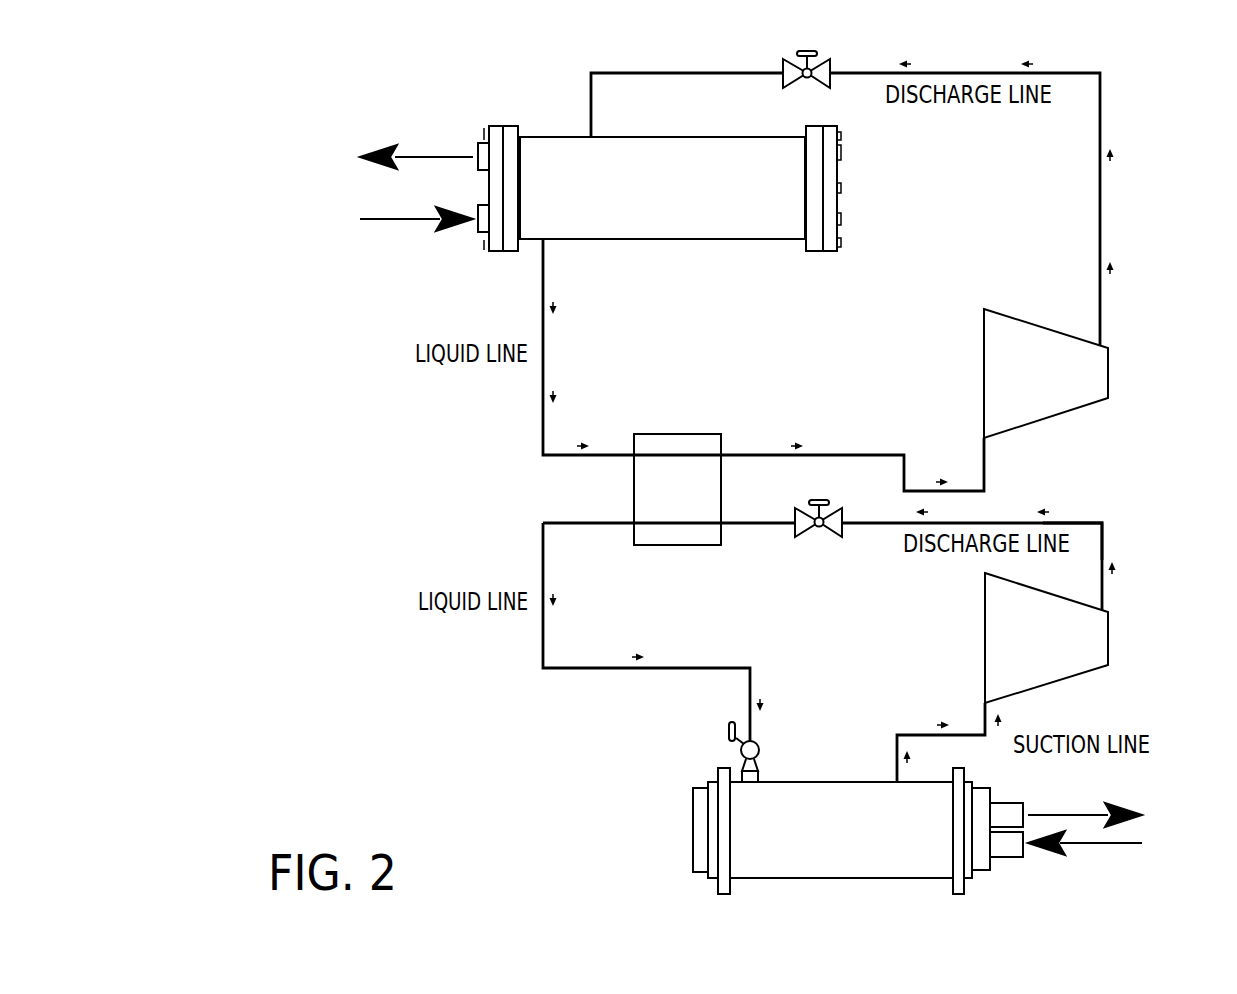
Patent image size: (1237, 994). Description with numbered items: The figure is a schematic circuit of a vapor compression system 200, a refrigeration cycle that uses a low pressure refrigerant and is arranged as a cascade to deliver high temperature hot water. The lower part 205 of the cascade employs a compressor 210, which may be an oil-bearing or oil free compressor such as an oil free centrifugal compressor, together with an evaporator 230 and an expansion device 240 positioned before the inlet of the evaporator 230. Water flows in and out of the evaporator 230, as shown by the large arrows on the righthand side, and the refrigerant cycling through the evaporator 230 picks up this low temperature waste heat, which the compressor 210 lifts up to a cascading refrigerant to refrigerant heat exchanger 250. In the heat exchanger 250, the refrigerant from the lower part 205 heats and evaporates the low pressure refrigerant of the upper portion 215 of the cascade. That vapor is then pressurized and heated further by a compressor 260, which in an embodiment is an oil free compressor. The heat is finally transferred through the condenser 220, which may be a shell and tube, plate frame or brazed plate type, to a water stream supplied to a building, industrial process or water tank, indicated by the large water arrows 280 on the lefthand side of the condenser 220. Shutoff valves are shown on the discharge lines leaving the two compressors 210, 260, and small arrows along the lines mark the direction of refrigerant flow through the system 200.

The vapor compression system 200 is at (1140, 182).
The lower part 205 is at (1070, 522).
The compressor 210 is at (1110, 630).
The upper portion 215 is at (1100, 320).
The condenser 220 is at (556, 135).
The evaporator 230 is at (692, 830).
The expansion device 240 is at (757, 735).
The refrigerant to refrigerant heat exchanger 250 is at (672, 434).
The compressor 260 is at (1108, 372).
The cooling fluid flow 280 is at (385, 150).